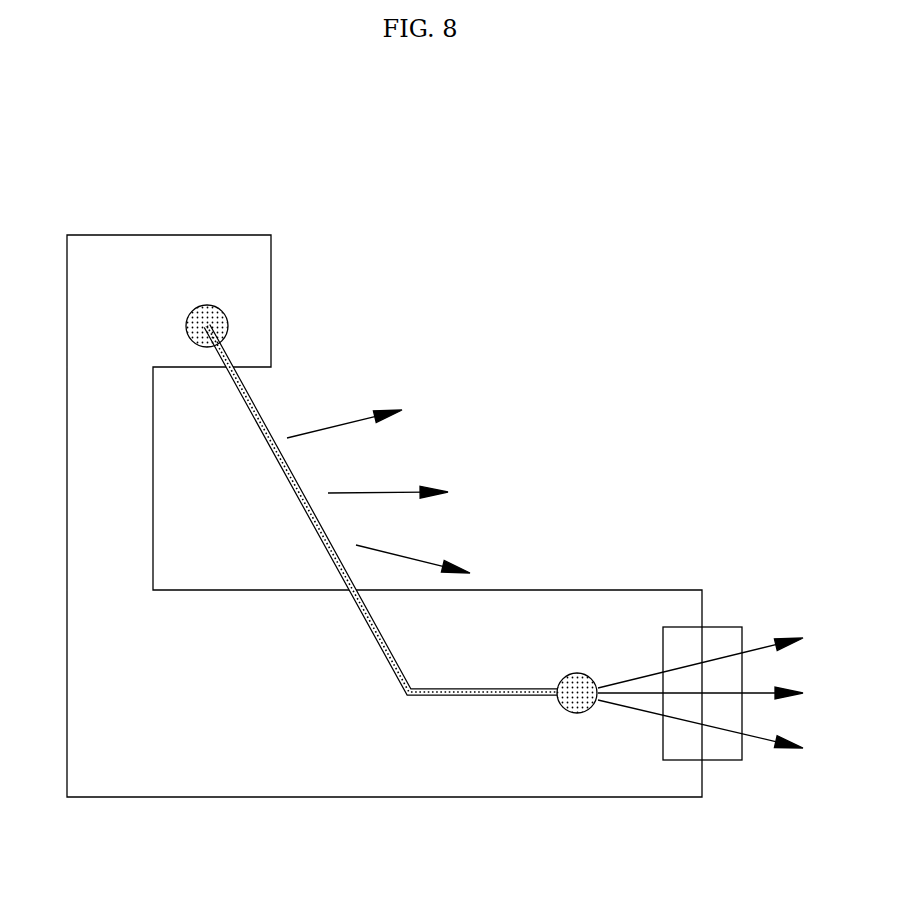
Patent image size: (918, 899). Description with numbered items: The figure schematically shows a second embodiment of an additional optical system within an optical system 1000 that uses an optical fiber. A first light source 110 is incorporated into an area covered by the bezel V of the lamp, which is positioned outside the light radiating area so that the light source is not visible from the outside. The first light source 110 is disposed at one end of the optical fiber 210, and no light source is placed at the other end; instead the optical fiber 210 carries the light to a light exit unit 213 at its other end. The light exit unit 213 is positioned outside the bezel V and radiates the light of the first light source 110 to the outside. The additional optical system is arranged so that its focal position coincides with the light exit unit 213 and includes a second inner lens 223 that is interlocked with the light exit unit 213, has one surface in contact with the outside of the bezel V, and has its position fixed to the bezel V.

The optical system 1000 is at (517, 196).
The bezel V is at (117, 256).
The first light source 110 is at (227, 316).
The optical fiber 210 is at (325, 545).
The light exit unit 213 is at (577, 673).
The second inner lens 223 is at (725, 627).